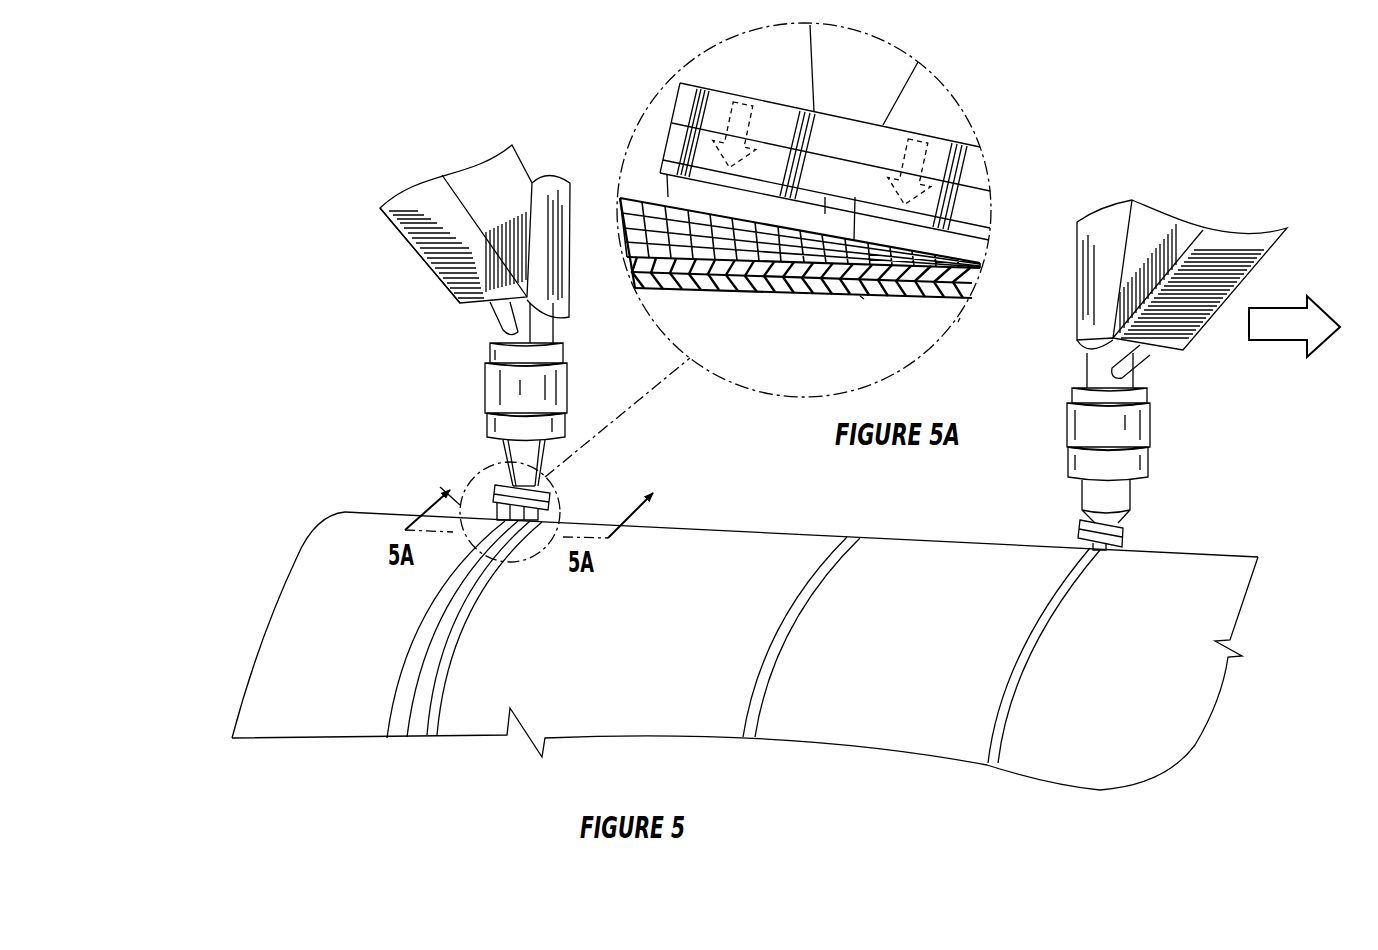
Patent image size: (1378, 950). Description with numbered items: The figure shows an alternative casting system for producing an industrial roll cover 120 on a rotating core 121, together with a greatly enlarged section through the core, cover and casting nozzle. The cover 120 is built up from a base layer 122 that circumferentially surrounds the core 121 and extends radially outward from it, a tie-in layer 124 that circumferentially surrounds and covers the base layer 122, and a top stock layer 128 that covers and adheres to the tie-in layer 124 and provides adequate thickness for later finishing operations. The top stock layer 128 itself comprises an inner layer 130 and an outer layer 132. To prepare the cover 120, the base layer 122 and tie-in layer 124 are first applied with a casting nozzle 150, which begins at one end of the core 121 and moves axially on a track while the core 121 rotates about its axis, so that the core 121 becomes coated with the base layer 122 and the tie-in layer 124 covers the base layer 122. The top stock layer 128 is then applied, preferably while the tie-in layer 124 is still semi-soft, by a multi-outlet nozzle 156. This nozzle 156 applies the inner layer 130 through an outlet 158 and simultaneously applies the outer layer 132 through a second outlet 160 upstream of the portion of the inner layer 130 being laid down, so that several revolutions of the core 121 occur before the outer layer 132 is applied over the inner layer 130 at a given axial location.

In FIG. 5A, the industrial roll cover 120 is at (640, 183).
In FIG. 5, the core 121 is at (1208, 597).
In FIG. 5A, the core 121 is at (958, 322).
In FIG. 5, the base layer 122 is at (995, 562).
In FIG. 5A, the base layer 122 is at (862, 297).
In FIG. 5, the tie-in layer 124 is at (783, 550).
In FIG. 5A, the tie-in layer 124 is at (970, 276).
In FIG. 5A, the top stock layer 128 is at (957, 250).
In FIG. 5, the inner layer 130 is at (540, 518).
In FIG. 5A, the inner layer 130 is at (970, 267).
In FIG. 5, the outer layer 132 is at (440, 487).
In FIG. 5A, the outer layer 132 is at (640, 227).
In FIG. 5, the casting nozzle 150 is at (1132, 432).
In FIG. 5, the multi-outlet nozzle 156 is at (437, 380).
In FIG. 5, the outlet 158 is at (557, 490).
In FIG. 5, the outlet 160 is at (496, 485).